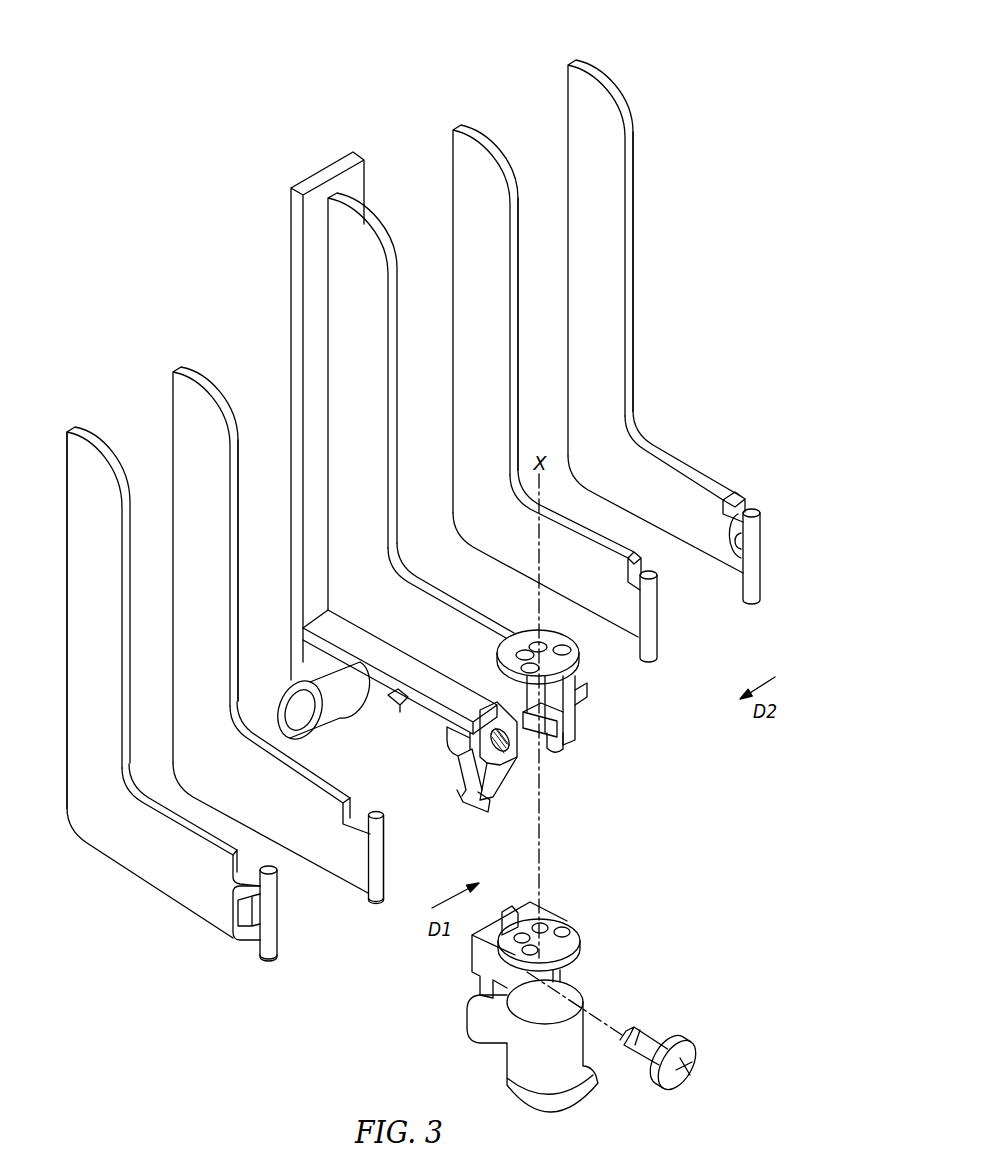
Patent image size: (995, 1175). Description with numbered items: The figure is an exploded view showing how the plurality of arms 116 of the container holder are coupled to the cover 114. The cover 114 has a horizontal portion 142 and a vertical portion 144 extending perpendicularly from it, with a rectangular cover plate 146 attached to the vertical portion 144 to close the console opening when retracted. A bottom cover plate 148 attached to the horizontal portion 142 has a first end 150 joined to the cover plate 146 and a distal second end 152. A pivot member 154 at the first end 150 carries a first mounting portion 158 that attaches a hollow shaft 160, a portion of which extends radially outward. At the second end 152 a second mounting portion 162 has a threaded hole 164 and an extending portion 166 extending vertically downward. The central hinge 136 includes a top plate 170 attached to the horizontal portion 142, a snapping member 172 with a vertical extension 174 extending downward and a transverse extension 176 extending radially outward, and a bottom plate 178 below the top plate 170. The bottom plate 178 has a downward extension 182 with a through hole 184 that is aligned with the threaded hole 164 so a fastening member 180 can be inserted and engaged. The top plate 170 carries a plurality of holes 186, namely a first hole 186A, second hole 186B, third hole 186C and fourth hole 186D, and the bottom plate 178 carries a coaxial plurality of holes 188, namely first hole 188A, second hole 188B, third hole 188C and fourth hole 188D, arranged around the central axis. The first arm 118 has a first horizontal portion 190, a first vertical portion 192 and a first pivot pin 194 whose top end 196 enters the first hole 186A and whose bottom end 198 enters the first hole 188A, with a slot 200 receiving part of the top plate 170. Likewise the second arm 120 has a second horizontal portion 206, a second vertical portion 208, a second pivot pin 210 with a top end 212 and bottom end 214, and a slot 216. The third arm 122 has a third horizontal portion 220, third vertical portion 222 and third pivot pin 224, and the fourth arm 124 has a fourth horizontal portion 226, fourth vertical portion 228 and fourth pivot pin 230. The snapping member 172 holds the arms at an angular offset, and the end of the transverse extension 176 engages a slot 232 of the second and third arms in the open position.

The cover 114 is at (298, 161).
The plurality of arms 116 is at (692, 66).
The first arm 118 is at (191, 370).
The second arm 120 is at (82, 430).
The third arm 122 is at (601, 69).
The fourth arm 124 is at (476, 128).
The central hinge 136 is at (600, 650).
The horizontal portion 142 is at (428, 592).
The vertical portion 144 is at (399, 405).
The cover plate 146 is at (341, 166).
The bottom cover plate 148 is at (425, 720).
The first end 150 is at (312, 626).
The second end 152 is at (452, 762).
The pivot member 154 is at (365, 744).
The first mounting portion 158 is at (402, 706).
The hollow shaft 160 is at (335, 726).
The second mounting portion 162 is at (519, 742).
The threaded hole 164 is at (495, 775).
The extending portion 166 is at (468, 812).
The top plate 170 is at (585, 662).
The snapping member 172 is at (588, 742).
The vertical extension 174 is at (592, 738).
The transverse extension 176 is at (583, 700).
The bottom plate 178 is at (583, 940).
The fastening member 180 is at (652, 1040).
The downward extension 182 is at (478, 980).
The through hole 184 is at (502, 1012).
The plurality of holes 186 is at (510, 648).
The first hole 186A is at (522, 650).
The second hole 186B is at (521, 668).
The third hole 186C is at (563, 650).
The fourth hole 186D is at (538, 642).
The plurality of holes 188 is at (572, 918).
The first hole 188A is at (522, 933).
The second hole 188B is at (522, 950).
The third hole 188C is at (570, 932).
The fourth hole 188D is at (541, 923).
The first horizontal portion 190 is at (300, 860).
The first vertical portion 192 is at (238, 546).
The first pivot pin 194 is at (385, 862).
The top end 196 is at (382, 816).
The bottom end 198 is at (376, 902).
The slot 200 is at (357, 836).
The second horizontal portion 206 is at (160, 890).
The second vertical portion 208 is at (64, 652).
The second pivot pin 210 is at (280, 920).
The top end 212 is at (260, 866).
The bottom end 214 is at (268, 960).
The slot 216 is at (236, 910).
The third horizontal portion 220 is at (688, 470).
The third vertical portion 222 is at (634, 272).
The third pivot pin 224 is at (762, 541).
The fourth horizontal portion 226 is at (578, 532).
The fourth vertical portion 228 is at (520, 330).
The fourth pivot pin 230 is at (661, 618).
The slot 232 is at (745, 505).